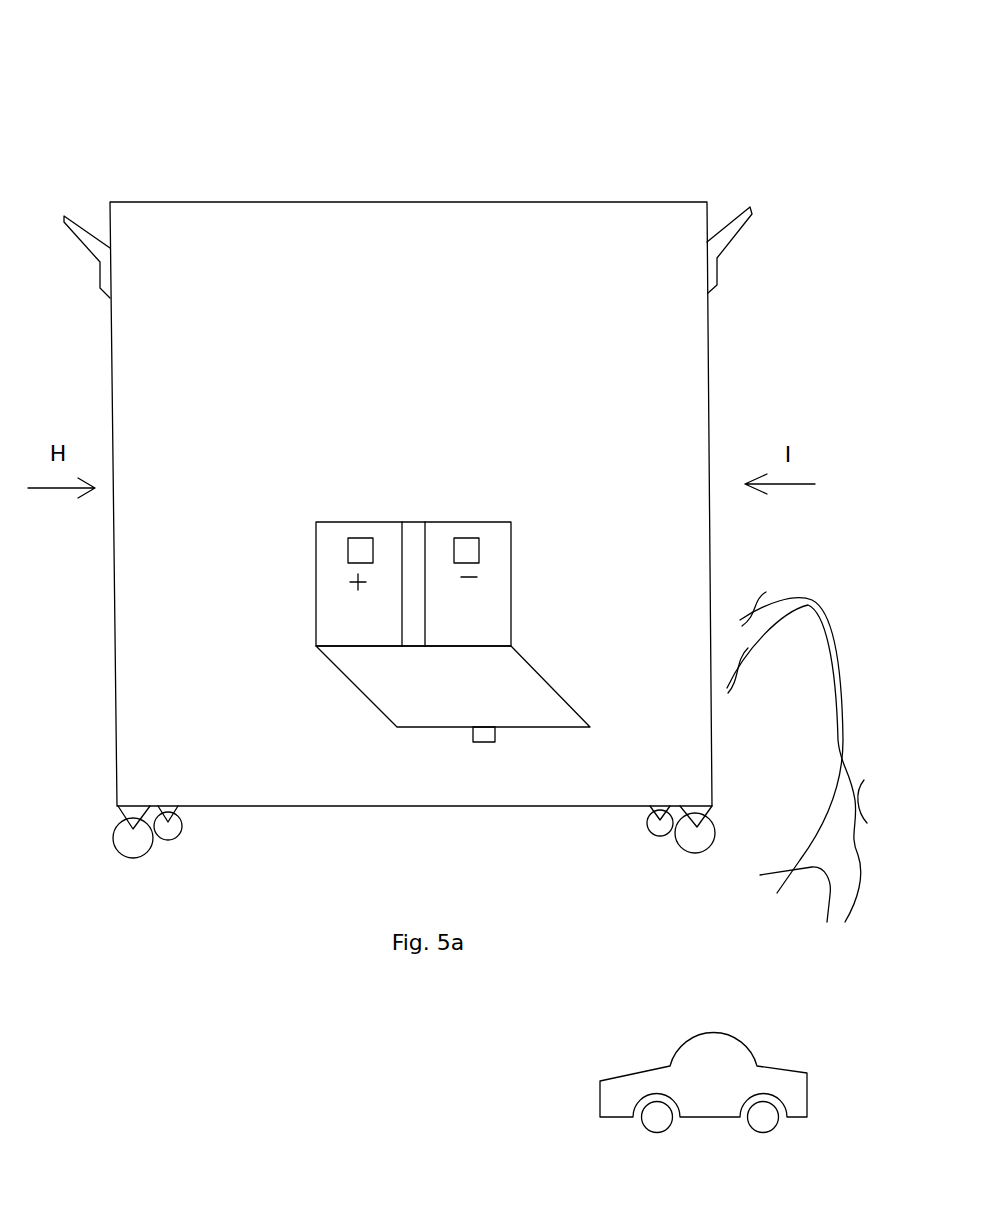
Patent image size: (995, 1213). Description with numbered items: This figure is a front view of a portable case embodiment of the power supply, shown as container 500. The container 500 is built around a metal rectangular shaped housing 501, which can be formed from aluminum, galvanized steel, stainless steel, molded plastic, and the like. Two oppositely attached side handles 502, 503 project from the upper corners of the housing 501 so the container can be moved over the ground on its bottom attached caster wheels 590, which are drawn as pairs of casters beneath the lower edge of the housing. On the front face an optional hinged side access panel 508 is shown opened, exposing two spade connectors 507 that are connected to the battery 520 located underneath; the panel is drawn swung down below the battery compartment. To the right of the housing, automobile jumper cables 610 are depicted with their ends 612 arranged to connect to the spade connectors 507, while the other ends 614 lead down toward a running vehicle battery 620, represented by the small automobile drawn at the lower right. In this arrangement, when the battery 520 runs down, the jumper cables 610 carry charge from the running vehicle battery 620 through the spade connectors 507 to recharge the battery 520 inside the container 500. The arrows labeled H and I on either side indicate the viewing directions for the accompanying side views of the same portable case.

The container 500 is at (195, 67).
The housing 501 is at (428, 217).
The side handle 502 is at (732, 217).
The side handle 503 is at (75, 215).
The spade connectors 507 is at (466, 550).
The hinged side access panel 508 is at (485, 601).
The battery 520 is at (345, 627).
The caster wheels 590 is at (140, 845).
The automobile jumper cables 610 is at (842, 645).
The ends of jumper cables 612 is at (792, 600).
The other ends of jumper cables 614 is at (808, 916).
The running vehicle battery 620 is at (633, 1085).